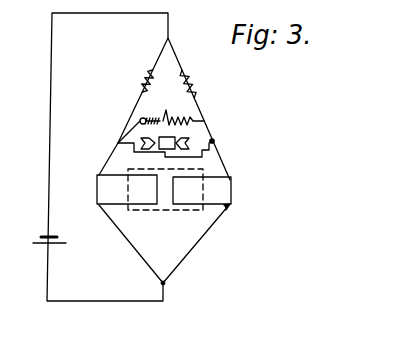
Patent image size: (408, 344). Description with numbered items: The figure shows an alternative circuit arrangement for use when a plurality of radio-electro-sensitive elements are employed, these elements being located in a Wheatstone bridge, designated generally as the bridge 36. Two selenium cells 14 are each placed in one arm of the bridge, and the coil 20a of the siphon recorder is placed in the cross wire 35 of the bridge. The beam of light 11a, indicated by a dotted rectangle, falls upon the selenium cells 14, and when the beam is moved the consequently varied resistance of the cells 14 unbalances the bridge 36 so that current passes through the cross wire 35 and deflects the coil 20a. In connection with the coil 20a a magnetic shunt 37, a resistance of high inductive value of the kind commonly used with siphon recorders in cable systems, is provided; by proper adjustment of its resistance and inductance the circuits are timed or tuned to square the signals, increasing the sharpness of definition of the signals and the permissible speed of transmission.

The magnetic shunt 37 is at (167, 111).
The cross wire 35 is at (212, 141).
The coil 20a is at (214, 154).
The selenium cell 14 is at (100, 188).
The beam of light 11a is at (165, 206).
The Wheatstone bridge 36 is at (157, 273).